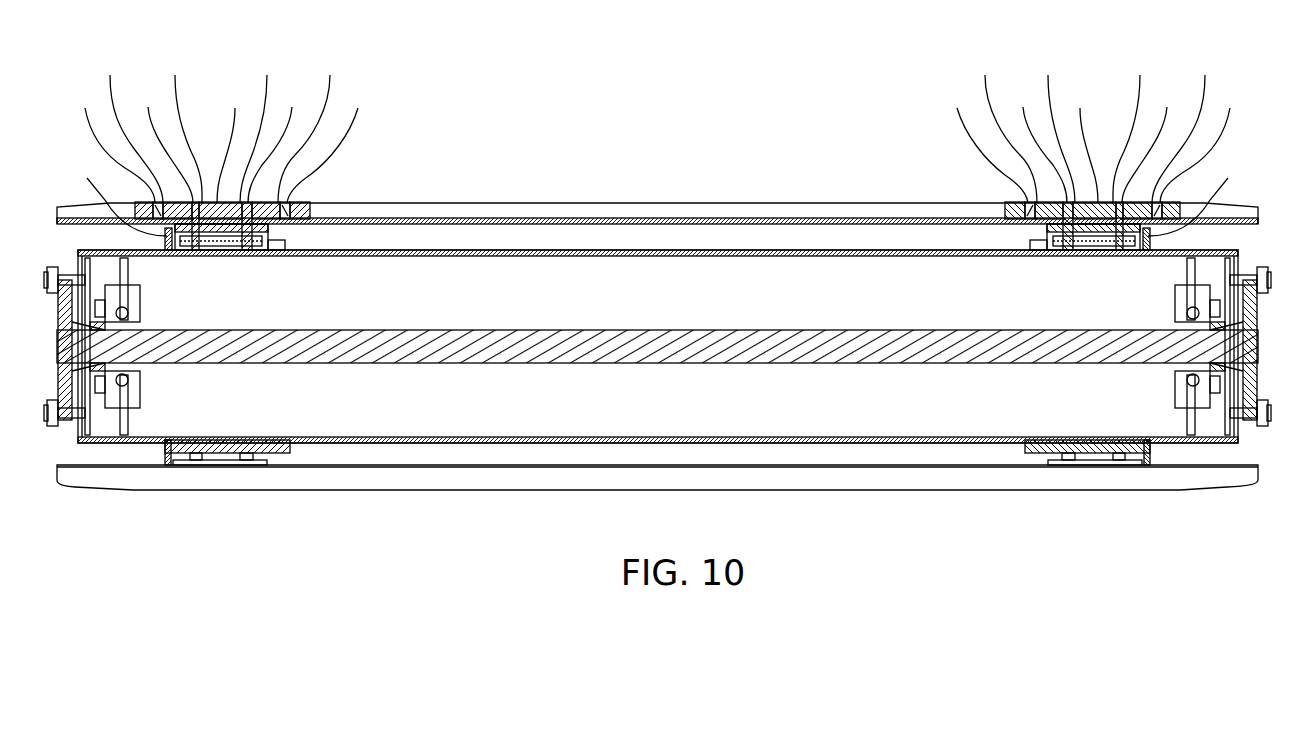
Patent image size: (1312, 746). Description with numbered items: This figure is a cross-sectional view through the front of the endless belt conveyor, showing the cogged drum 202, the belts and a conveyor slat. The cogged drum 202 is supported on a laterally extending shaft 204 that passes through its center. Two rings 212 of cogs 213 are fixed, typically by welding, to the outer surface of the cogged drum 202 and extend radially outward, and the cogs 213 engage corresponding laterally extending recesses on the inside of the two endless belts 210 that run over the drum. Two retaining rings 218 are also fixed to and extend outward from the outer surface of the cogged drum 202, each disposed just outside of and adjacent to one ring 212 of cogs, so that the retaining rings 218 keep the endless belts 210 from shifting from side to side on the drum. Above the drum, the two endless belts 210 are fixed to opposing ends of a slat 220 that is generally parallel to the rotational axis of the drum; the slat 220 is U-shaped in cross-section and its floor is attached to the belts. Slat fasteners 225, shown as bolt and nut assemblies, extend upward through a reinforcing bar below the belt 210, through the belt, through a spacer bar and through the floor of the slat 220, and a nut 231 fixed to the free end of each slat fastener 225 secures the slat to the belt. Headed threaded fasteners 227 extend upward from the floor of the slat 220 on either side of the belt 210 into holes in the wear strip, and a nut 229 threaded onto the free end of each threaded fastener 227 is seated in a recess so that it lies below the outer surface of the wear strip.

The cogged drum 202 is at (652, 250).
The shaft 204 is at (716, 329).
The endless belts 210 is at (657, 147).
The rings of cogs 212 is at (283, 252).
The cogs 213 is at (657, 245).
The retaining rings 218 is at (659, 200).
The slats 220 is at (568, 204).
The slat fasteners 225 is at (657, 147).
The threaded fasteners 227 is at (657, 147).
The nut 229 is at (658, 131).
The nut 231 is at (659, 147).